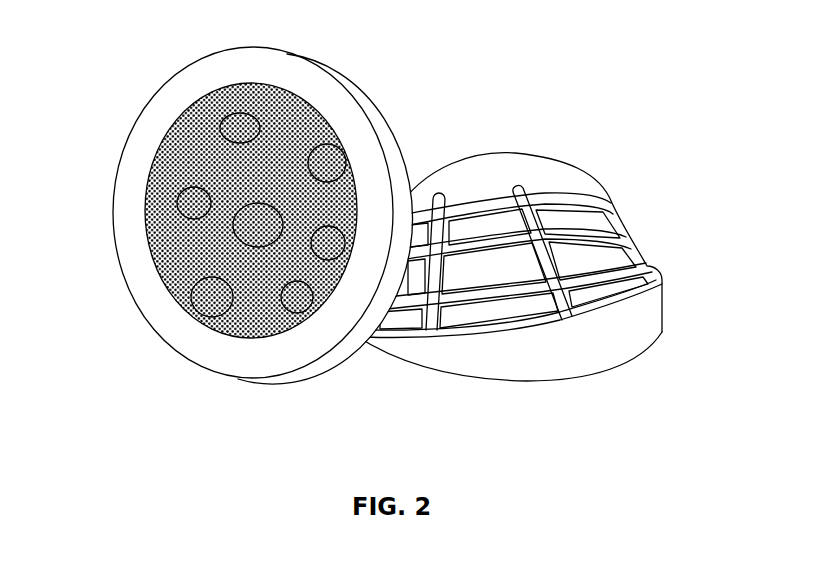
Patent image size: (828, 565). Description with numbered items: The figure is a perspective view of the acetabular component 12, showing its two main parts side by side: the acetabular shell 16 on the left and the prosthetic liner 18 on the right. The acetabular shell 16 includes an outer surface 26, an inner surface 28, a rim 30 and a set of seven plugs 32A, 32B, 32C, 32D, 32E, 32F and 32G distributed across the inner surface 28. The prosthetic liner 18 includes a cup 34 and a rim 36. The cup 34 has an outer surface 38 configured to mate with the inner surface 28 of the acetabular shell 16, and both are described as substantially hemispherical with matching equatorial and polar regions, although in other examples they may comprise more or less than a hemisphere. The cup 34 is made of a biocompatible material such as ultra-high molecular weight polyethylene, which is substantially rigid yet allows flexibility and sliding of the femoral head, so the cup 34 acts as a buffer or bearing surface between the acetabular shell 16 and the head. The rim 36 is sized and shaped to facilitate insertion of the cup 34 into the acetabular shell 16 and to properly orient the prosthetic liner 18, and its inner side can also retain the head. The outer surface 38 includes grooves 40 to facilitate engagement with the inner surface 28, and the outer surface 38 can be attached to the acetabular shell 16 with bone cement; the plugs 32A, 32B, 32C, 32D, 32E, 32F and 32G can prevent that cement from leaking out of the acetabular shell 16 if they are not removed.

The acetabular component 12 is at (420, 103).
The acetabular shell 16 is at (158, 97).
The prosthetic liner 18 is at (600, 182).
The outer surface 26 is at (397, 157).
The inner surface 28 is at (240, 347).
The rim 30 is at (220, 352).
The plug 32A is at (245, 111).
The plug 32B is at (342, 150).
The plug 32C is at (303, 317).
The plug 32D is at (193, 334).
The plug 32E is at (237, 220).
The plug 32F is at (160, 187).
The plug 32G is at (330, 287).
The cup 34 is at (612, 243).
The rim 36 is at (647, 313).
The outer surface 38 is at (561, 210).
The grooves 40 is at (524, 214).